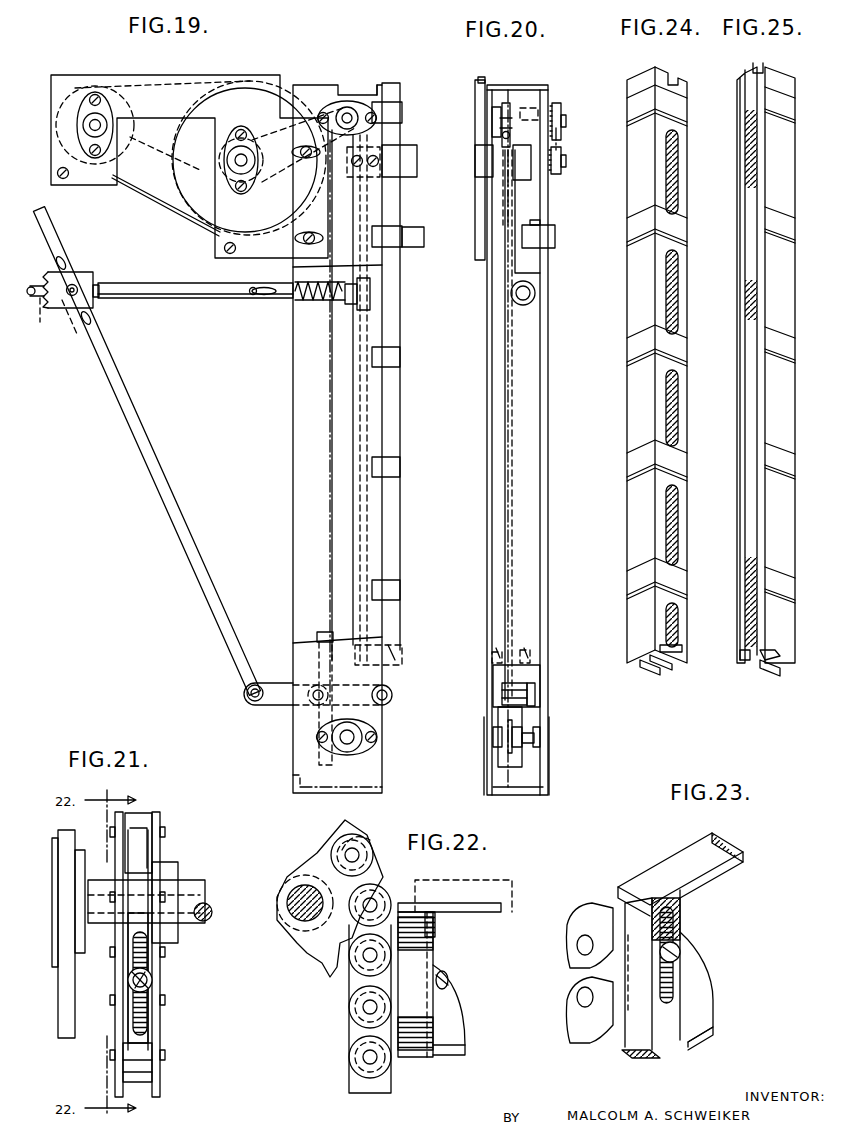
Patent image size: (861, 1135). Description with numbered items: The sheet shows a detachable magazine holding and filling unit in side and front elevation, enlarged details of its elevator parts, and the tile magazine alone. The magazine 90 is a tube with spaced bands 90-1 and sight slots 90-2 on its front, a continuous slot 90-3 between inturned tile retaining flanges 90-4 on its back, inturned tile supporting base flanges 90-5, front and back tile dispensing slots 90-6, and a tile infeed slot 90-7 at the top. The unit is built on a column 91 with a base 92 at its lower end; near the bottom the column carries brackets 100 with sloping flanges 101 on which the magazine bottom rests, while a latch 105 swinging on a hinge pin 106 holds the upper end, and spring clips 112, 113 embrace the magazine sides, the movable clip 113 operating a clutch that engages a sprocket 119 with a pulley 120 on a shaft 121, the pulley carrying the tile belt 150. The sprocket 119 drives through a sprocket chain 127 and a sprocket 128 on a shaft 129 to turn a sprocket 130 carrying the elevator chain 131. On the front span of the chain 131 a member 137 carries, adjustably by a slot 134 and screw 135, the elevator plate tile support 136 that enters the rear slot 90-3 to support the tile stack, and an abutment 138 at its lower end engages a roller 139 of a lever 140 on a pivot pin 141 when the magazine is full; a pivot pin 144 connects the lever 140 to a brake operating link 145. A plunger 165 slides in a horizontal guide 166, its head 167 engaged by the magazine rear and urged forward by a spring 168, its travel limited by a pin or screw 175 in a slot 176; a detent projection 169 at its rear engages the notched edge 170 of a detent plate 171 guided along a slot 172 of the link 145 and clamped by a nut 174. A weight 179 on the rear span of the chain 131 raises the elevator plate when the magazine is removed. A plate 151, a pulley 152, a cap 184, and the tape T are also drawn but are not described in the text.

In FIG. 19, the magazine 90 is at (392, 325).
In FIG. 24, the magazine 90 is at (630, 328).
In FIG. 25, the magazine 90 is at (783, 297).
In FIG. 19, the spaced bands 90-1 is at (396, 110).
In FIG. 24, the spaced bands 90-1 is at (683, 113).
In FIG. 25, the spaced bands 90-1 is at (795, 108).
In FIG. 24, the sight slots 90-2 is at (675, 172).
In FIG. 25, the continuous slot 90-3 is at (746, 440).
In FIG. 25, the tile retaining flanges 90-4 is at (760, 555).
In FIG. 24, the tile supporting base flanges 90-5 is at (641, 667).
In FIG. 25, the tile supporting base flanges 90-5 is at (770, 670).
In FIG. 24, the tile dispensing slots 90-6 is at (682, 646).
In FIG. 25, the tile dispensing slots 90-6 is at (778, 651).
In FIG. 25, the tile infeed slot 90-7 is at (739, 83).
In FIG. 19, the column 91 is at (296, 406).
In FIG. 20, the column 91 is at (547, 378).
In FIG. 21, the column 91 is at (62, 1000).
In FIG. 19, the base 92 is at (300, 788).
In FIG. 20, the base 92 is at (540, 787).
In FIG. 19, the brackets 100 is at (398, 658).
In FIG. 20, the brackets 100 is at (495, 660).
In FIG. 19, the flanges 101 is at (392, 650).
In FIG. 20, the flanges 101 is at (530, 656).
In FIG. 19, the latch 105 is at (420, 238).
In FIG. 20, the latch 105 is at (550, 237).
In FIG. 20, the hinge pin 106 is at (541, 223).
In FIG. 19, the spring clip 112 is at (405, 152).
In FIG. 20, the spring clip 112 is at (485, 165).
In FIG. 20, the spring clip 113 is at (530, 168).
In FIG. 19, the sprocket 119 is at (220, 165).
In FIG. 20, the sprocket 119 is at (564, 174).
In FIG. 19, the pulley 120 is at (172, 160).
In FIG. 19, the shaft 121 is at (238, 162).
In FIG. 20, the shaft 121 is at (563, 158).
In FIG. 19, the sprocket chain 127 is at (270, 122).
In FIG. 20, the sprocket chain 127 is at (562, 138).
In FIG. 19, the sprocket 128 is at (336, 106).
In FIG. 20, the sprocket 128 is at (558, 104).
In FIG. 19, the shaft 129 is at (348, 110).
In FIG. 20, the shaft 129 is at (566, 119).
In FIG. 21, the shaft 129 is at (210, 913).
In FIG. 22, the shaft 129 is at (300, 893).
In FIG. 19, the sprocket 130 is at (385, 88).
In FIG. 20, the sprocket 130 is at (505, 105).
In FIG. 21, the sprocket 130 is at (140, 828).
In FIG. 22, the sprocket 130 is at (328, 962).
In FIG. 19, the elevator chain 131 is at (328, 507).
In FIG. 20, the elevator chain 131 is at (505, 380).
In FIG. 21, the elevator chain 131 is at (162, 855).
In FIG. 22, the elevator chain 131 is at (350, 1032).
In FIG. 23, the elevator chain 131 is at (592, 905).
In FIG. 21, the slot 134 is at (145, 960).
In FIG. 22, the slot 134 is at (435, 940).
In FIG. 23, the slot 134 is at (668, 928).
In FIG. 21, the screw 135 is at (152, 980).
In FIG. 22, the screw 135 is at (448, 973).
In FIG. 23, the screw 135 is at (680, 950).
In FIG. 20, the elevator plate tile support 136 is at (505, 135).
In FIG. 21, the elevator plate tile support 136 is at (145, 900).
In FIG. 22, the elevator plate tile support 136 is at (503, 906).
In FIG. 23, the elevator plate tile support 136 is at (670, 858).
In FIG. 21, the member 137 is at (122, 1025).
In FIG. 22, the member 137 is at (460, 1035).
In FIG. 23, the member 137 is at (713, 998).
In FIG. 21, the abutment 138 is at (115, 1060).
In FIG. 22, the abutment 138 is at (453, 1056).
In FIG. 23, the abutment 138 is at (706, 1036).
In FIG. 19, the roller 139 is at (390, 696).
In FIG. 20, the roller 139 is at (500, 695).
In FIG. 19, the lever 140 is at (272, 683).
In FIG. 20, the lever 140 is at (536, 700).
In FIG. 19, the pivot pin 141 is at (310, 702).
In FIG. 19, the pivot pin 144 is at (247, 695).
In FIG. 19, the brake operating link 145 is at (165, 495).
In FIG. 20, the brake operating link 145 is at (545, 686).
In FIG. 19, the belt 150 is at (165, 205).
In FIG. 19, the mounting plate 151 is at (113, 158).
In FIG. 19, the motor pulley 152 is at (92, 125).
In FIG. 19, the plunger 165 is at (96, 285).
In FIG. 19, the horizontal guide 166 is at (178, 283).
In FIG. 19, the head 167 is at (365, 292).
In FIG. 20, the head 167 is at (536, 293).
In FIG. 19, the spring 168 is at (321, 302).
In FIG. 19, the detent projection 169 is at (39, 318).
In FIG. 19, the notched edge 170 is at (45, 282).
In FIG. 19, the detent plate 171 is at (80, 272).
In FIG. 19, the slot 172 is at (80, 303).
In FIG. 19, the nut 174 is at (73, 305).
In FIG. 19, the pin or screw 175 is at (253, 294).
In FIG. 19, the slot 176 is at (265, 288).
In FIG. 19, the weight 179 is at (323, 631).
In FIG. 20, the weight 179 is at (505, 762).
In FIG. 20, the end cap 184 is at (488, 90).
In FIG. 21, the tape T is at (200, 895).
In FIG. 22, the tape T is at (500, 880).